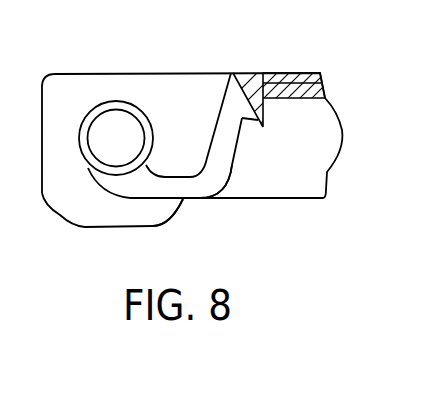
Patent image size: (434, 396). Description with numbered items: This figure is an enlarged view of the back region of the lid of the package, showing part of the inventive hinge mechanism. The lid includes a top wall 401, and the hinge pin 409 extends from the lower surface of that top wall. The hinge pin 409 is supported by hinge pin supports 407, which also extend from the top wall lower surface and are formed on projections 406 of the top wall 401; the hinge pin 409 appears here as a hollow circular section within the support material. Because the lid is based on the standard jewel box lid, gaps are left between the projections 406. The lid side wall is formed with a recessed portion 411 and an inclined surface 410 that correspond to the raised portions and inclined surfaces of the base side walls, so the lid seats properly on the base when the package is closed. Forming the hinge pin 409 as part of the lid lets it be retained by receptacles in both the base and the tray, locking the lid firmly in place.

The top wall 401 is at (292, 82).
The projection of the top wall 406 is at (228, 175).
The hinge pin support 407 is at (130, 180).
The hinge pin 409 is at (107, 142).
The inclined surface 410 is at (168, 213).
The recessed portion 411 is at (222, 196).